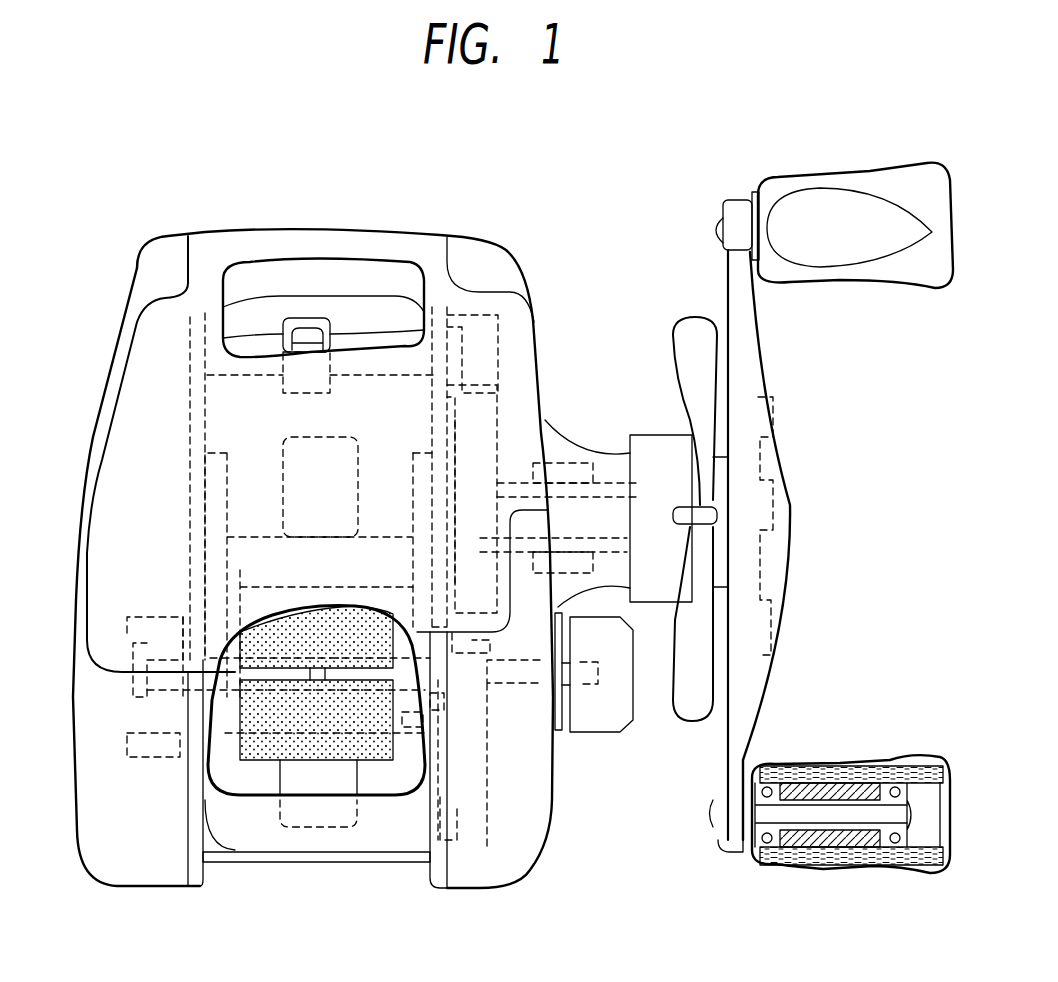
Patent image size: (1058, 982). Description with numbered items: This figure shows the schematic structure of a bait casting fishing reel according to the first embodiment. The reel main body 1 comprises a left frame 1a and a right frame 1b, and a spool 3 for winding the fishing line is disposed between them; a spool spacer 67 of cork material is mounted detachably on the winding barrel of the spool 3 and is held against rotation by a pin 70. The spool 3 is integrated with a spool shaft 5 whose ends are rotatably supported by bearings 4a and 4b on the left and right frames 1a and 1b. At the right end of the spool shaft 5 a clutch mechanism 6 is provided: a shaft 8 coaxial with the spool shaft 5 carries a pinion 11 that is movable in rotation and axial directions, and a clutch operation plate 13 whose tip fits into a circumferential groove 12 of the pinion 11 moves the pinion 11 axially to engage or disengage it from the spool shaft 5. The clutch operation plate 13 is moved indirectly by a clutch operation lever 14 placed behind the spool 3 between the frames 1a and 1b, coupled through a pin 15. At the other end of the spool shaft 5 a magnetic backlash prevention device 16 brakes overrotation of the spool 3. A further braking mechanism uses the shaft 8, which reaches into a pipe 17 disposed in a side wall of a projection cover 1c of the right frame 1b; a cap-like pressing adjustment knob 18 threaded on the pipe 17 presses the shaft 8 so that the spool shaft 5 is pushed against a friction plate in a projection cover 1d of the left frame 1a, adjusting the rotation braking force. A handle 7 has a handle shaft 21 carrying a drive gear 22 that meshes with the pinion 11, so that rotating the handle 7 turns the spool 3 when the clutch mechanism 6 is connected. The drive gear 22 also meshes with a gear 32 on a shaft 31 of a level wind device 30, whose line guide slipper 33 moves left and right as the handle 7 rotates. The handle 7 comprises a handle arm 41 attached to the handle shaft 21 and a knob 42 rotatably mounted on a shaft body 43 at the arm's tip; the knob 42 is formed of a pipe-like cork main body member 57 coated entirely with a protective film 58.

The reel main body 1 is at (492, 246).
The left frame 1a is at (205, 882).
The right frame 1b is at (438, 882).
The projection cover 1c is at (553, 842).
The projection cover 1d is at (125, 878).
The spool 3 is at (407, 740).
The bearing 4a is at (160, 735).
The bearing 4b is at (407, 590).
The spool shaft 5 is at (193, 620).
The clutch mechanism 6 is at (450, 665).
The handle 7 is at (729, 285).
The shaft 8 is at (521, 667).
The pinion 11 is at (450, 715).
The circumferential groove 12 is at (440, 633).
The clutch operation plate 13 is at (447, 703).
The clutch operation lever 14 is at (340, 850).
The pin 15 is at (455, 805).
The backlash prevention device 16 is at (127, 617).
The pipe 17 is at (558, 733).
The pressing adjustment knob 18 is at (625, 733).
The handle shaft 21 is at (663, 497).
The drive gear 22 is at (505, 402).
The level wind device 30 is at (332, 290).
The shaft 31 is at (400, 347).
The gear 32 is at (505, 327).
The line guide slipper 33 is at (307, 320).
The handle arm 41 is at (763, 355).
The knob 42 is at (886, 284).
The shaft body 43 is at (865, 820).
The main body member 57 is at (830, 852).
The protective film 58 is at (802, 766).
The spool spacer 67 is at (273, 760).
The pin 70 is at (312, 672).